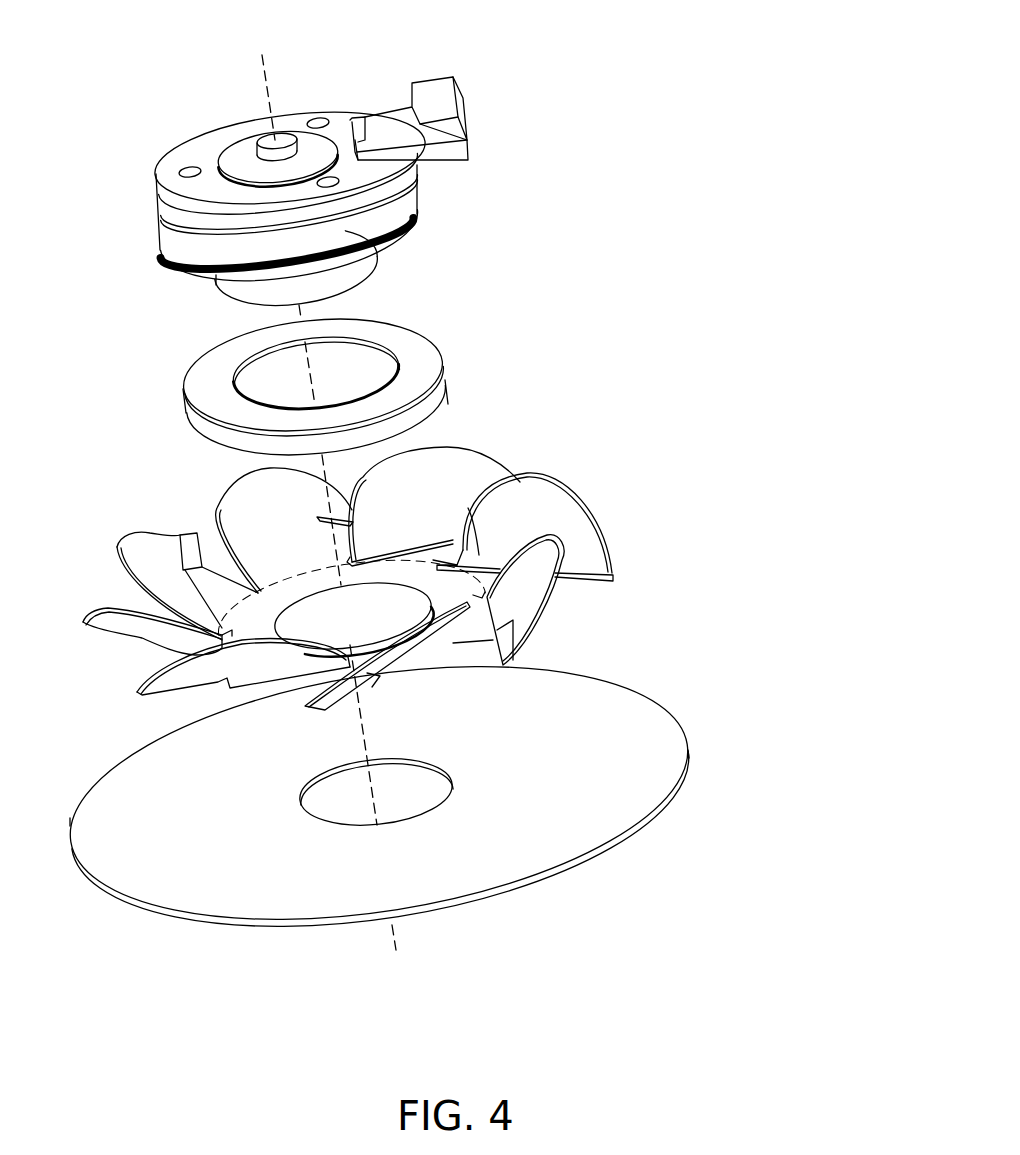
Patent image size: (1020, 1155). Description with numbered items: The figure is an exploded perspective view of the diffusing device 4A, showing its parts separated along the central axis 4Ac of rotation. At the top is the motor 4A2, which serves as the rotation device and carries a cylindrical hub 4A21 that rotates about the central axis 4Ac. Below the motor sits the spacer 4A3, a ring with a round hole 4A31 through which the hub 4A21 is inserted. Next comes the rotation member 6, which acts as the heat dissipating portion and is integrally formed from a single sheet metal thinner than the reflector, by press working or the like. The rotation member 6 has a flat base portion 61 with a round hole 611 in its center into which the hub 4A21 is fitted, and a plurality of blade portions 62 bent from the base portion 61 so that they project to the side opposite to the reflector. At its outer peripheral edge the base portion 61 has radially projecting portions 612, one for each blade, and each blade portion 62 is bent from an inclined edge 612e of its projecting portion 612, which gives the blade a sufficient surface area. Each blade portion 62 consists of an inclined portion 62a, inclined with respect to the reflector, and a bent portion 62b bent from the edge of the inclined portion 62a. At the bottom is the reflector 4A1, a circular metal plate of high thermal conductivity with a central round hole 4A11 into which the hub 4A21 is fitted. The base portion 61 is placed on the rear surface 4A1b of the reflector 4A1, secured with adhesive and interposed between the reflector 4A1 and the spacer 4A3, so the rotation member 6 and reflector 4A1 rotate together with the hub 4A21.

The diffusing device 4A is at (585, 63).
The central axis of rotation 4Ac is at (264, 63).
The motor 4A2 is at (487, 185).
The hub 4A21 is at (360, 268).
The spacer 4A3 is at (490, 360).
The round hole 4A31 is at (372, 385).
The rotation member 6 is at (688, 468).
The base portion 61 is at (482, 592).
The round hole 611 is at (372, 640).
The blade portion 62 is at (700, 497).
The inclined portion 62a is at (582, 508).
The bent portion 62b is at (583, 575).
The projecting portion 612 is at (490, 573).
The edge 612e is at (478, 563).
The reflector 4A1 is at (708, 733).
The rear surface 4A1b is at (642, 784).
The round hole 4A11 is at (437, 793).